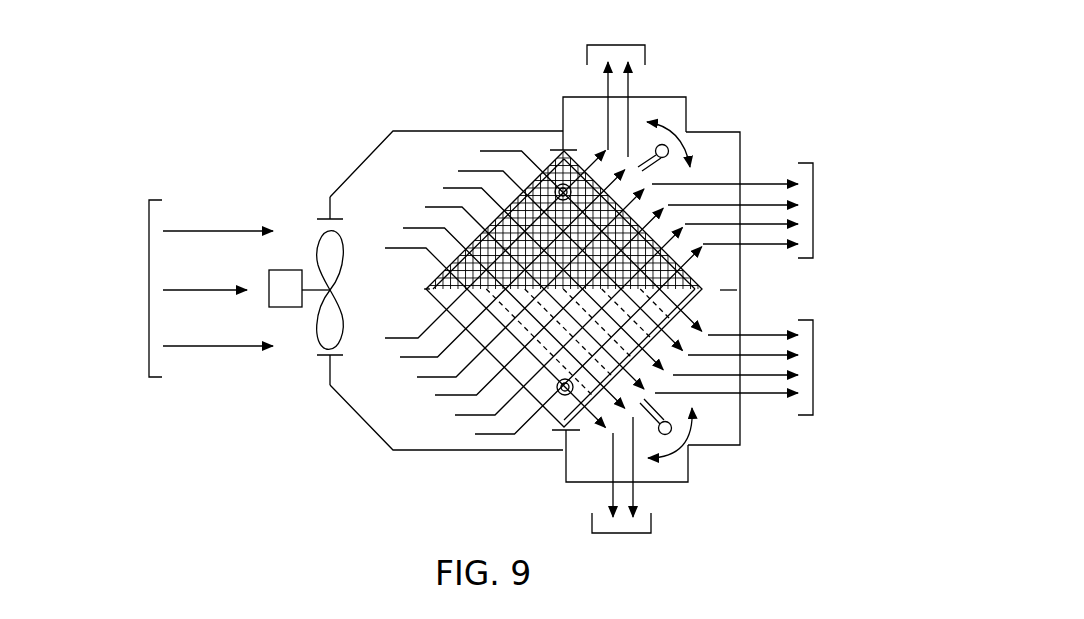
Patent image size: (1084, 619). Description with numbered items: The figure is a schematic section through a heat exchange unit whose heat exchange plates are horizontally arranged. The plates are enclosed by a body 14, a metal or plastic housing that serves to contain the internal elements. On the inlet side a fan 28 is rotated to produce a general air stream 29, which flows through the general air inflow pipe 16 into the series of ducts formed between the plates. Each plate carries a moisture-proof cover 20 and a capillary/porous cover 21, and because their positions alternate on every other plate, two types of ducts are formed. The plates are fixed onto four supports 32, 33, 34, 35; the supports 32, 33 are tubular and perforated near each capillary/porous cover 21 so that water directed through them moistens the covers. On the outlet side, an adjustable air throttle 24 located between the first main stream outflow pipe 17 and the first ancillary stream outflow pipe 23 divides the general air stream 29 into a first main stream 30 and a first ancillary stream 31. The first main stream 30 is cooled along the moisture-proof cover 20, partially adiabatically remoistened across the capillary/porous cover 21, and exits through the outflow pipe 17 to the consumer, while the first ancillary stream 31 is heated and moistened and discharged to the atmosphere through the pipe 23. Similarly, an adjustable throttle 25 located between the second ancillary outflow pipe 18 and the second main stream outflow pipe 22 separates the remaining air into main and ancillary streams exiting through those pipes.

The body 14 is at (363, 418).
The general air inflow pipe 16 is at (325, 217).
The first main stream outflow pipe 17 is at (740, 435).
The second ancillary outflow pipe 18 is at (665, 97).
The moisture-proof cover 20 is at (477, 235).
The capillary/porous cover 21 is at (500, 203).
The second main stream outflow pipe 22 is at (740, 157).
The first ancillary stream outflow pipe 23 is at (665, 483).
The adjustable air throttle 24 is at (695, 445).
The adjustable throttle 25 is at (672, 140).
The fan 28 is at (330, 328).
The general air stream 29 is at (149, 290).
The first main stream 30 is at (813, 212).
The first ancillary stream 31 is at (616, 45).
The support 32 is at (563, 395).
The support 33 is at (540, 167).
The support 34 is at (428, 291).
The support 35 is at (743, 300).